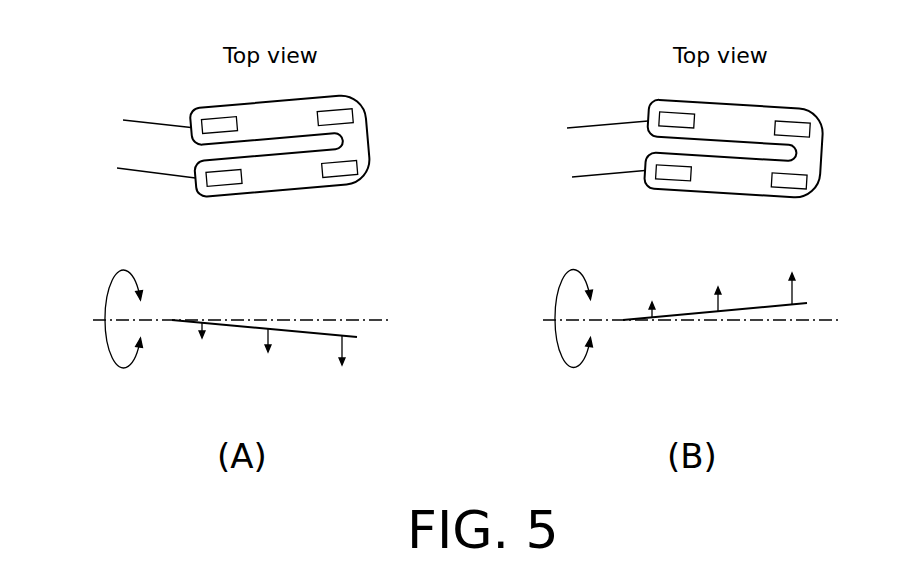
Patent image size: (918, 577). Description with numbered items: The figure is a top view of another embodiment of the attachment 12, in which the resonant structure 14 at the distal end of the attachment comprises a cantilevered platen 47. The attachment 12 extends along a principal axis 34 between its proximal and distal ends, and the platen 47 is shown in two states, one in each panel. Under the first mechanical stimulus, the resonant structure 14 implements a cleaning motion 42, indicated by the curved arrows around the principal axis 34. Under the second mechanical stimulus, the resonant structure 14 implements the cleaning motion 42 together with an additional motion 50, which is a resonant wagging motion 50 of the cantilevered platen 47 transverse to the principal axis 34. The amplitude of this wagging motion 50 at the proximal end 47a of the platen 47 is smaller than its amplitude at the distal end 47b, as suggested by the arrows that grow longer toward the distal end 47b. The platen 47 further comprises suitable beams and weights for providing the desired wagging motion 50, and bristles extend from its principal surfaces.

The attachment 12 is at (150, 137).
The resonant structure 14 is at (530, 134).
The cantilevered platen 47 is at (357, 142).
The proximal end of the cantilevered platen 47a is at (197, 108).
The distal end of the cantilevered platen 47b is at (367, 180).
The principal axis 34 is at (327, 318).
The resonant wagging motion 50 is at (298, 333).
The cleaning motion 42 is at (123, 368).